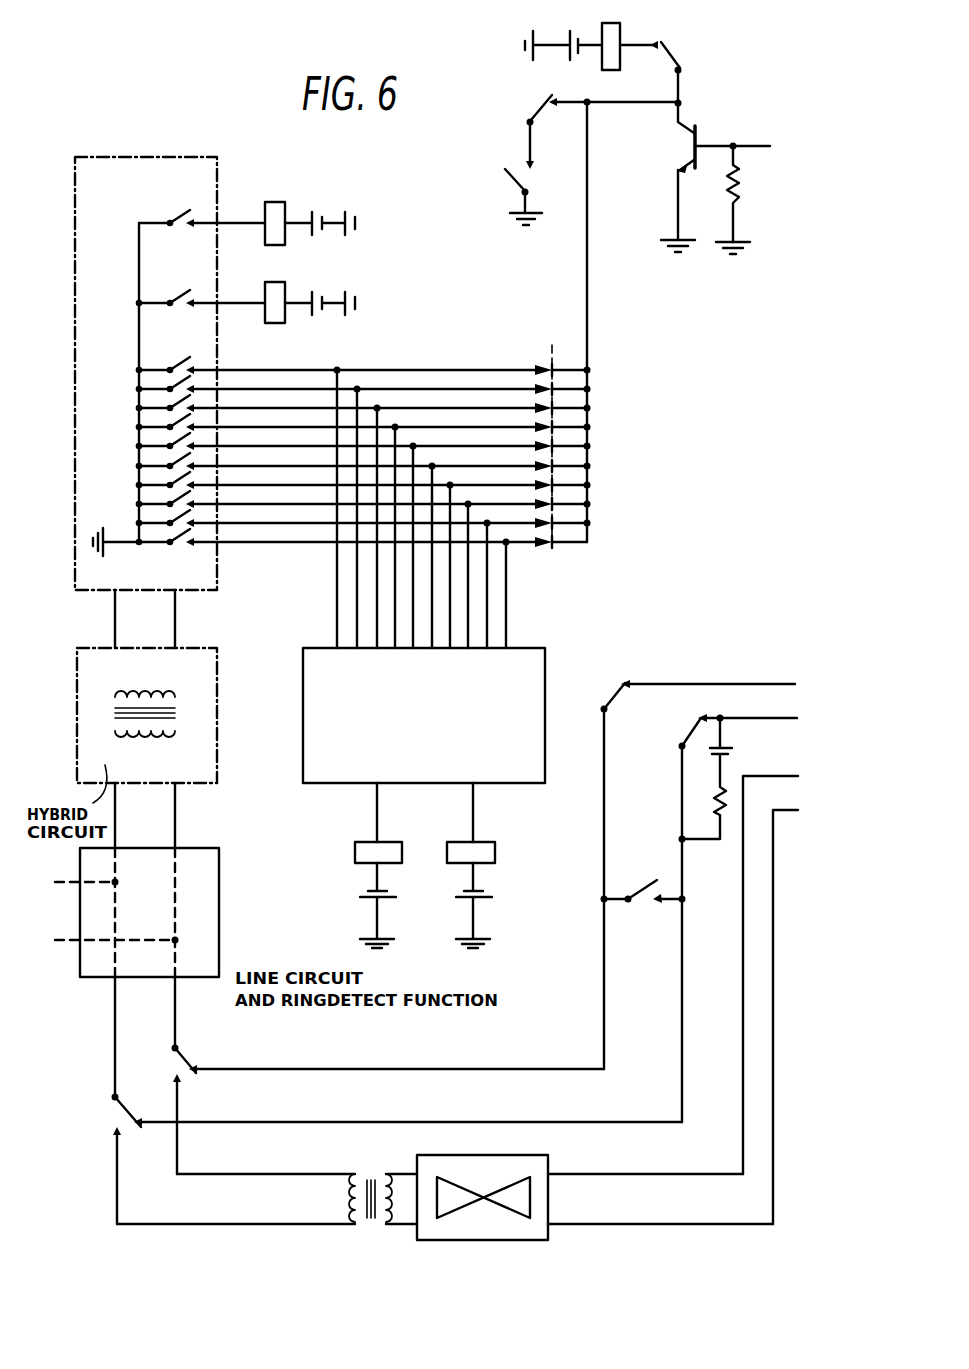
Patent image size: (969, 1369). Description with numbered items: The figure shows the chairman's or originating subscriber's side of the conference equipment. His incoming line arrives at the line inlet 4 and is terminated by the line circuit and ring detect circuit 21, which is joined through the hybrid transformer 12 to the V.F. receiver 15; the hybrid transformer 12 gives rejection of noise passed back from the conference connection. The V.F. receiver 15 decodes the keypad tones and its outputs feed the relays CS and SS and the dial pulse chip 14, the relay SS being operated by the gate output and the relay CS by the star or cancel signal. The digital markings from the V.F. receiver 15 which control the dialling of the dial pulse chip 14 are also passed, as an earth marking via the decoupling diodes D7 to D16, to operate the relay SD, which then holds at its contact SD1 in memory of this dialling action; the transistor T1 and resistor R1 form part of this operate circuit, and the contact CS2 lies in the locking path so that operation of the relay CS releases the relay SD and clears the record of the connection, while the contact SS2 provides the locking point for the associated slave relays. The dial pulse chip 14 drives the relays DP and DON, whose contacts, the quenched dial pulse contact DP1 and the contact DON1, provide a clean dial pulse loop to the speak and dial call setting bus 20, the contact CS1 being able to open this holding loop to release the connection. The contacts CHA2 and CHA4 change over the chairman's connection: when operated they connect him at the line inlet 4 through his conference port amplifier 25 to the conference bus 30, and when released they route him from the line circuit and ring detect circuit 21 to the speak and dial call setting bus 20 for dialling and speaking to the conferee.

The relay SD is at (621, 28).
The contact CS2 is at (680, 51).
The contact SS2 is at (522, 131).
The contact SD1 is at (540, 195).
The transistor T1 is at (690, 146).
The resistor R1 is at (746, 199).
The relay CS is at (307, 209).
The relay SS is at (307, 316).
The V.F. receiver 15 is at (82, 418).
The decoupling diode D7 is at (562, 354).
The decoupling diode D16 is at (558, 555).
The dial pulse chip 14 is at (437, 733).
The dial pulse relay DP is at (360, 865).
The relay DON is at (499, 865).
The hybrid transformer 12 is at (78, 710).
The line circuit and ring detect circuit 21 is at (132, 891).
The line inlet 4 is at (53, 870).
The contact CS1 is at (607, 697).
The speak and dial call setting bus 20 is at (753, 690).
The quenched dial pulse contact DP1 is at (684, 727).
The contact DON1 is at (656, 882).
The conference bus 30 is at (767, 780).
The contact CHA2 is at (188, 1061).
The contact CHA4 is at (114, 1108).
The conference port amplifier 25 is at (507, 1155).